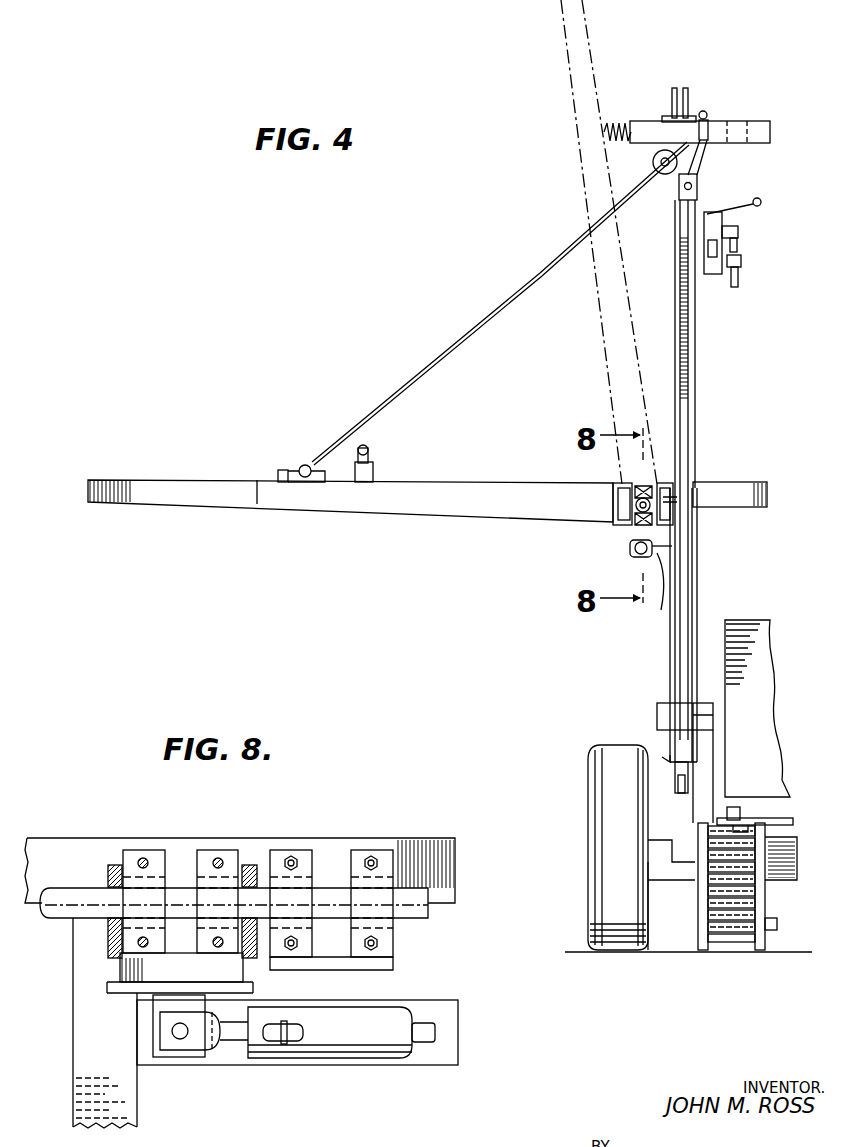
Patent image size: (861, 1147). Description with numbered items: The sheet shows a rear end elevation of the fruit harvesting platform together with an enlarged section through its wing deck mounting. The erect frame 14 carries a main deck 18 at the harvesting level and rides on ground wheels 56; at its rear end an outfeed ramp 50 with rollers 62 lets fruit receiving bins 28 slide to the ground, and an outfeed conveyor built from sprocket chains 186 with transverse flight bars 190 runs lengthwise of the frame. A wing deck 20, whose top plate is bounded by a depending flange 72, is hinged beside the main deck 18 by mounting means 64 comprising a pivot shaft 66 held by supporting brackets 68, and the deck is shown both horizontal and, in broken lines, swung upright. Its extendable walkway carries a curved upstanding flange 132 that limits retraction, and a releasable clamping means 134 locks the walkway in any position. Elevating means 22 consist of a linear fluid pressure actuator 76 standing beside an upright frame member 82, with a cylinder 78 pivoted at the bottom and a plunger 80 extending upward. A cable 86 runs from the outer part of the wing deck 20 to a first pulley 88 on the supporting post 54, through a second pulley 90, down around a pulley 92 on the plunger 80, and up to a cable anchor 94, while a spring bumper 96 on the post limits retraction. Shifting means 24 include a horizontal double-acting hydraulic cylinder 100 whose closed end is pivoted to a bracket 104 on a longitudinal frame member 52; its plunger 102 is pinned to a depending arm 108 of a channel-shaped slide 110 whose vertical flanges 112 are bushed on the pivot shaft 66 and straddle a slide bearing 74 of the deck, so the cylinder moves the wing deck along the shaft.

In FIG. 4, the wing deck 20 is at (560, 44).
In FIG. 4, the depending flange 72 is at (347, 506).
In FIG. 4, the curved upstanding flange 132 is at (280, 468).
In FIG. 4, the clamping or locking means 134 is at (376, 462).
In FIG. 4, the cable 86 is at (455, 343).
In FIG. 4, the spring bumper 96 is at (617, 121).
In FIG. 4, the second cable guide or pulley 90 is at (689, 97).
In FIG. 4, the cable anchor 94 is at (711, 117).
In FIG. 4, the first cable guide or pulley 88 is at (653, 163).
In FIG. 4, the elevating means 22 is at (706, 177).
In FIG. 4, the cable guide or pulley 92 is at (700, 186).
In FIG. 4, the supporting post 54 is at (699, 323).
In FIG. 4, the plunger 80 is at (690, 358).
In FIG. 4, the mounting means 64 is at (652, 482).
In FIG. 8, the mounting means 64 is at (165, 848).
In FIG. 4, the slide 110 is at (634, 533).
In FIG. 8, the slide 110 is at (113, 993).
In FIG. 4, the pivot shaft 66 is at (636, 508).
In FIG. 8, the pivot shaft 66 is at (415, 895).
In FIG. 4, the double-acting hydraulic cylinder 100 is at (637, 555).
In FIG. 8, the double-acting hydraulic cylinder 100 is at (390, 1047).
In FIG. 4, the bracket 104 is at (659, 590).
In FIG. 4, the main deck 18 is at (744, 482).
In FIG. 4, the upright frame member 82 is at (699, 548).
In FIG. 4, the linear fluid pressure actuator 76 is at (701, 585).
In FIG. 4, the cylinder 78 is at (687, 609).
In FIG. 4, the fruit receiver or bin 28 is at (771, 631).
In FIG. 4, the transverse flight bar 190 is at (778, 818).
In FIG. 4, the sprocket chain 186 is at (741, 826).
In FIG. 4, the rollers 62 is at (713, 910).
In FIG. 4, the outfeed ramp 50 is at (768, 900).
In FIG. 4, the ground wheel 56 is at (613, 753).
In FIG. 8, the frame 14 is at (457, 838).
In FIG. 8, the vertical flange 112 is at (110, 866).
In FIG. 8, the slide bearing 74 is at (193, 897).
In FIG. 8, the supporting bracket 68 is at (335, 862).
In FIG. 8, the longitudinal frame member 52 is at (450, 1017).
In FIG. 8, the depending arm 108 is at (160, 1006).
In FIG. 8, the plunger 102 is at (240, 1046).
In FIG. 8, the shifting means 24 is at (313, 1062).